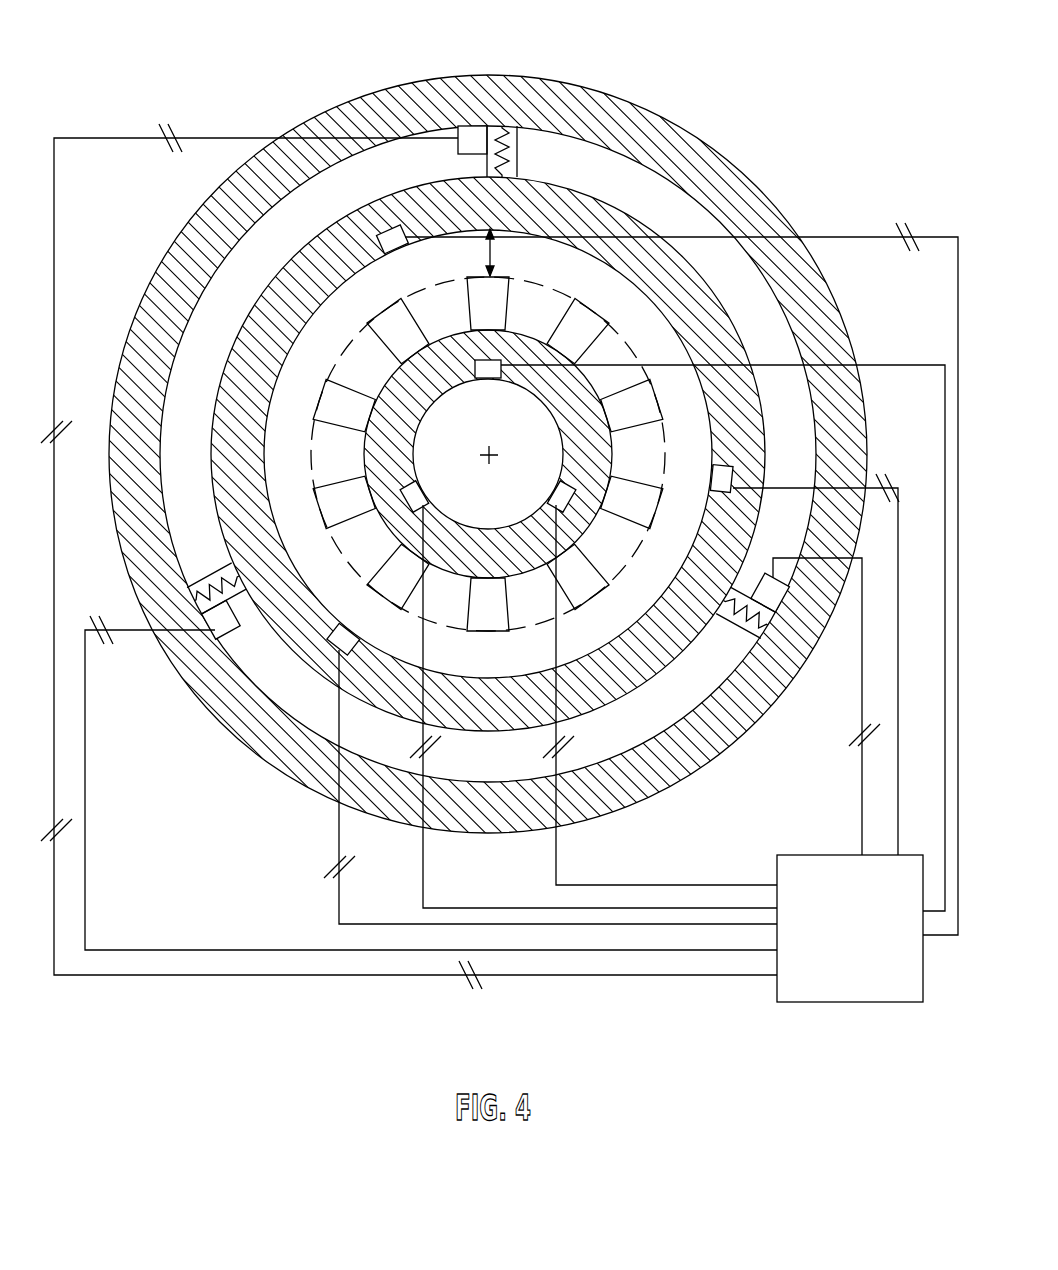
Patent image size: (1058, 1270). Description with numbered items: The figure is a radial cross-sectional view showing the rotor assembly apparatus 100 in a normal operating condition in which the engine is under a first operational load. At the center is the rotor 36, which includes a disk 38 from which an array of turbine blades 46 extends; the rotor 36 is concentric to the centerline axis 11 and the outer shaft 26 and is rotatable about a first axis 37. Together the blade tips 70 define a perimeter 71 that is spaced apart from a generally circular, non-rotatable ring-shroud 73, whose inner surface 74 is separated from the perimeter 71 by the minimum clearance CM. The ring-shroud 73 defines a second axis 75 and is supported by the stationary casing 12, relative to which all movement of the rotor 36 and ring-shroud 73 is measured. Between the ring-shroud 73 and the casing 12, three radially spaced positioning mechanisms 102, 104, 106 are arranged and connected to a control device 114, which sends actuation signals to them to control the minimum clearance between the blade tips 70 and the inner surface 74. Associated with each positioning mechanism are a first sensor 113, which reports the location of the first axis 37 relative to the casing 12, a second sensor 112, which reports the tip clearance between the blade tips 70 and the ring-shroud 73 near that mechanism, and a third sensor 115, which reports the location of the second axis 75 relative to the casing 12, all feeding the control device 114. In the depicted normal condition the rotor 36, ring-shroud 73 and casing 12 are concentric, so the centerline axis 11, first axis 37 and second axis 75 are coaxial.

The rotor assembly apparatus 100 is at (717, 60).
The first positioning mechanism 102 is at (518, 167).
The second positioning mechanism 104 is at (225, 566).
The third positioning mechanism 106 is at (730, 633).
The third sensor 115 is at (458, 147).
The second sensor 112 is at (397, 247).
The first sensor 113 is at (487, 360).
The control device 114 is at (803, 983).
The casing 12 is at (833, 300).
The perimeter 71 is at (768, 185).
The ring-shroud 73 is at (770, 433).
The inner surface 74 is at (303, 335).
The blade tip 70 is at (603, 335).
The turbine blade 46 is at (469, 298).
The disk 38 is at (315, 420).
The rotor 36 is at (529, 635).
The outer shaft 26 is at (556, 406).
The first axis 37 is at (490, 477).
The second axis 75 is at (489, 455).
The centerline axis 11 is at (489, 460).